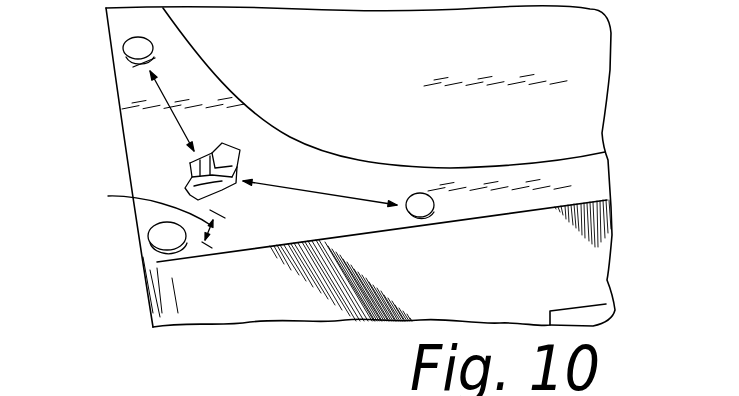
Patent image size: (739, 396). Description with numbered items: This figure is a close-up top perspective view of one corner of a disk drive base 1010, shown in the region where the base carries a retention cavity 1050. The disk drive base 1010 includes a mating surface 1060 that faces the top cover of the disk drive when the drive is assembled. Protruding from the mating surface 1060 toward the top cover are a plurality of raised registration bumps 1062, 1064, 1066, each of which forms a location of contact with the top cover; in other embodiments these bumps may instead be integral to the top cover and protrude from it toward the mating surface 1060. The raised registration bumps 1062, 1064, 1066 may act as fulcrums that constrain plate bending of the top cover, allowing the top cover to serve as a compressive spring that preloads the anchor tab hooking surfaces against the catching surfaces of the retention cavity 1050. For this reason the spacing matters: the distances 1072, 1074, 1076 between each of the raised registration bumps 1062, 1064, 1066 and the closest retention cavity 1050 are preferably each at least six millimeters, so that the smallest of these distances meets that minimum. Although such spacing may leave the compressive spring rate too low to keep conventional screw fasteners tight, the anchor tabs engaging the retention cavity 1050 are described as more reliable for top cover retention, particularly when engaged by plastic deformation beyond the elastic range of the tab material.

The disk drive base 1010 is at (357, 42).
The retention cavity 1050 is at (233, 150).
The mating surface 1060 is at (599, 177).
The raised registration bump 1062 is at (124, 42).
The raised registration bump 1064 is at (163, 238).
The raised registration bump 1066 is at (434, 213).
The distance 1072 is at (174, 110).
The distance 1074 is at (140, 214).
The distance 1076 is at (306, 193).